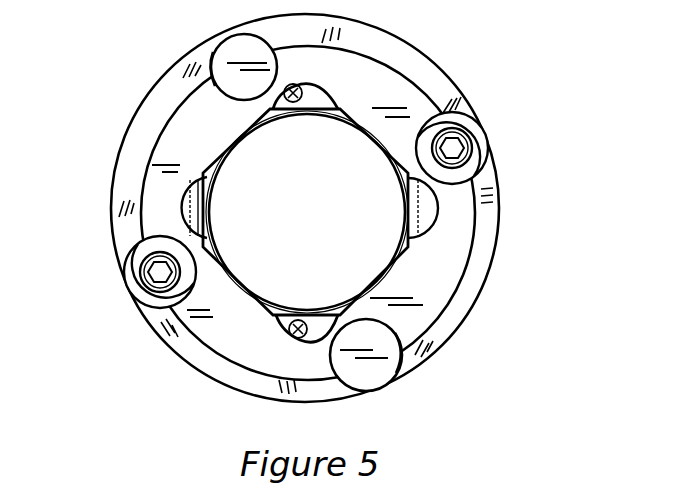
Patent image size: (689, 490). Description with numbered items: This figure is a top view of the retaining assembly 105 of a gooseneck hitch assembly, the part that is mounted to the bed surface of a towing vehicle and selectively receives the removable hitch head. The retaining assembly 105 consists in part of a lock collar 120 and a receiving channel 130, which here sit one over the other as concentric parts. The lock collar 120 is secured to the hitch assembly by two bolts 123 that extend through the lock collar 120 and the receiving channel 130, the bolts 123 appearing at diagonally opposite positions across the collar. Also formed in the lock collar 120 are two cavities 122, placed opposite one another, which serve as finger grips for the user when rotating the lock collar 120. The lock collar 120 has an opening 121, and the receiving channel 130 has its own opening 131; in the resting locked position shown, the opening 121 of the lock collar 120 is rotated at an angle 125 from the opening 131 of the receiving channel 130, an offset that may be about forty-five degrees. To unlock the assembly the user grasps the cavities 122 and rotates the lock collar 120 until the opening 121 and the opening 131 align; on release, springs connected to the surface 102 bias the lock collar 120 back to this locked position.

The surface 102 is at (552, 166).
The retaining assembly 105 is at (170, 352).
The lock collar 120 is at (430, 284).
The opening of the lock collar 121 is at (350, 110).
The cavity 122 is at (228, 60).
The bolt 123 is at (472, 150).
The angle of offset 125 is at (278, 288).
The receiving channel 130 is at (413, 212).
The opening of the receiving channel 131 is at (207, 158).